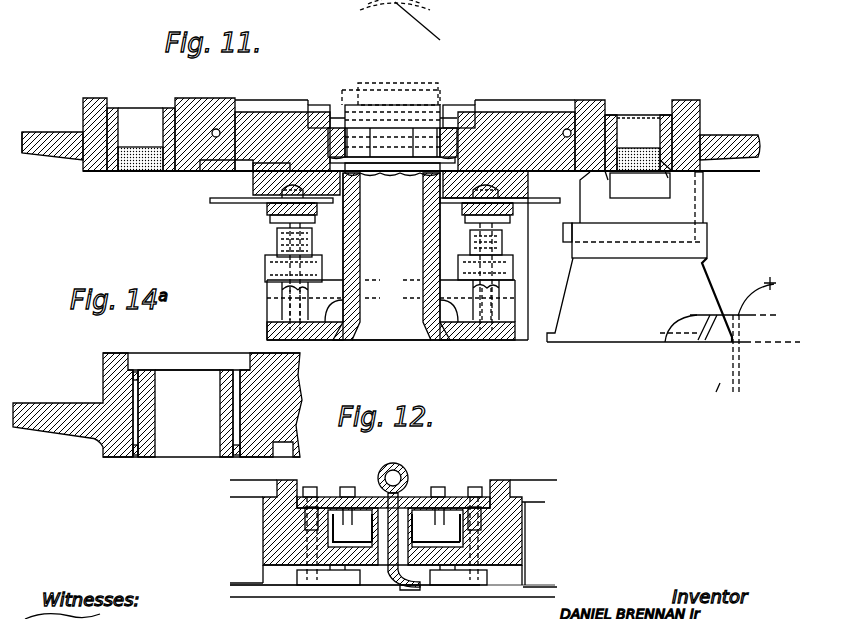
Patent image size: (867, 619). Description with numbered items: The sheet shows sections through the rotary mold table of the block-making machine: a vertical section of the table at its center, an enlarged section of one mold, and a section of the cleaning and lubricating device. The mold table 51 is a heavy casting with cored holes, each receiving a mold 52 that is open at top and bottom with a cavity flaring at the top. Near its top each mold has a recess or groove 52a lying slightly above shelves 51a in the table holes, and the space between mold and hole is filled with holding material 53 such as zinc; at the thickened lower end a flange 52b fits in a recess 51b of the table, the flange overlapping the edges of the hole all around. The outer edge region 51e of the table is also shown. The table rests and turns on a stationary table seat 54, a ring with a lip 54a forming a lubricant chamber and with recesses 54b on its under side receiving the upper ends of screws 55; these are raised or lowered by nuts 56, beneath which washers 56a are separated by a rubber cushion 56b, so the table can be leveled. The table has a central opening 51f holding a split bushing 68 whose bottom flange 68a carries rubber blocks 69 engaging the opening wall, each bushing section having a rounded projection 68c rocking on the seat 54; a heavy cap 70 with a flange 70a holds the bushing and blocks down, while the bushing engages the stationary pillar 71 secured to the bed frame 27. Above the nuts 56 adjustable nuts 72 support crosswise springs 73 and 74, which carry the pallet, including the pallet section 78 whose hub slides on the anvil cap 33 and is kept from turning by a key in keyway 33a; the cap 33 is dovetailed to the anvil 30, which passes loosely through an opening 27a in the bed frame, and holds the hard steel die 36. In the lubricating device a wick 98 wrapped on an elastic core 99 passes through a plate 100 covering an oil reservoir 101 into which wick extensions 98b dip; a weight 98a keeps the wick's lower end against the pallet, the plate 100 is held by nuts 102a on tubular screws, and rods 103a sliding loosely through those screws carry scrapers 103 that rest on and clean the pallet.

In FIG. 11, the mold table 51 is at (50, 135).
In FIG. 14A, the mold table 51 is at (63, 413).
In FIG. 12, the mold table 51 is at (530, 541).
In FIG. 11, the flange edge of plate 51e is at (39, 157).
In FIG. 11, the central opening of the table 51f is at (360, 192).
In FIG. 14A, the shelves in the holes of the mold table 51a is at (138, 380).
In FIG. 11, the recess adjacent to the mold flange 51b is at (676, 166).
In FIG. 14A, the recess adjacent to the mold flange 51b is at (140, 456).
In FIG. 11, the mold 52 is at (135, 120).
In FIG. 14A, the mold 52 is at (158, 386).
In FIG. 11, the recess or groove of the mold 52a is at (638, 129).
In FIG. 14A, the recess or groove of the mold 52a is at (221, 373).
In FIG. 11, the flange of the mold 52b is at (668, 172).
In FIG. 14A, the flange of the mold 52b is at (236, 455).
In FIG. 11, the holding material 53 is at (607, 173).
In FIG. 14A, the holding material 53 is at (228, 392).
In FIG. 11, the table seat 54 is at (528, 184).
In FIG. 11, the lip of the table seat 54a is at (253, 177).
In FIG. 11, the recesses of the table seat 54b is at (268, 201).
In FIG. 11, the screws 55 is at (288, 207).
In FIG. 11, the nuts 56 is at (277, 247).
In FIG. 11, the washers 56a is at (503, 242).
In FIG. 11, the cushion 56b is at (272, 269).
In FIG. 11, the bushing 68 is at (387, 137).
In FIG. 11, the bottom flange of the bushing 68a is at (437, 181).
In FIG. 11, the central rounded projection 68c is at (391, 158).
In FIG. 11, the rubber blocks 69 is at (331, 130).
In FIG. 11, the cap 70 is at (452, 111).
In FIG. 11, the flange of the cap 70a is at (338, 127).
In FIG. 11, the pillar 71 is at (420, 243).
In FIG. 11, the adjustable nuts 72 is at (312, 214).
In FIG. 11, the spring 73 is at (508, 205).
In FIG. 11, the spring 74 is at (545, 202).
In FIG. 11, the die 36 is at (640, 185).
In FIG. 11, the anvil cap 33 is at (641, 206).
In FIG. 11, the keyway of the anvil cap 33a is at (705, 216).
In FIG. 11, the anvil 30 is at (673, 282).
In FIG. 11, the bed frame 27 is at (719, 309).
In FIG. 11, the opening in the bed-plate 27a is at (745, 372).
In FIG. 12, the pallet section 78 is at (345, 592).
In FIG. 12, the wick 98 is at (383, 470).
In FIG. 12, the weight 98a is at (411, 588).
In FIG. 12, the extensions of the wick 98b is at (340, 546).
In FIG. 12, the elastic core 99 is at (406, 469).
In FIG. 12, the plate 100 is at (330, 497).
In FIG. 12, the oil reservoir 101 is at (447, 520).
In FIG. 12, the nuts 102a is at (472, 487).
In FIG. 12, the scraper 103 is at (464, 585).
In FIG. 12, the rods 103a is at (523, 562).